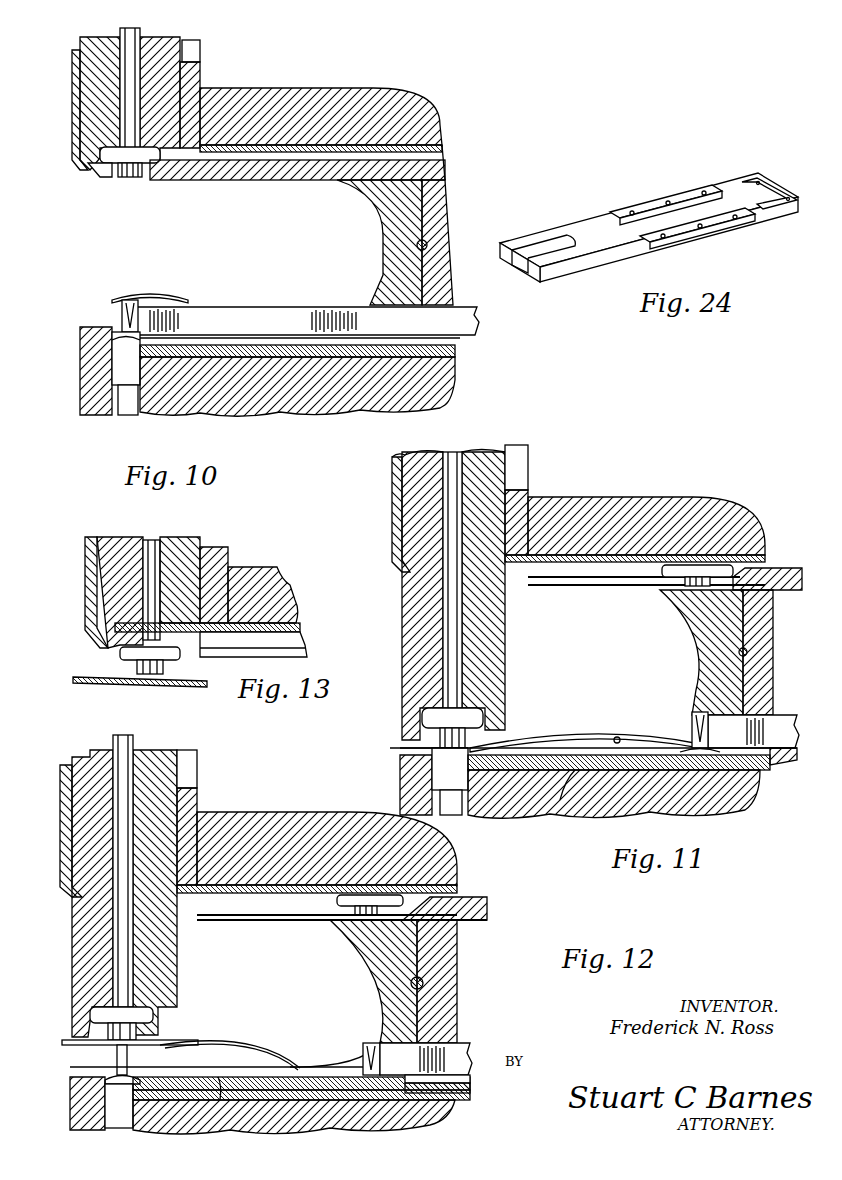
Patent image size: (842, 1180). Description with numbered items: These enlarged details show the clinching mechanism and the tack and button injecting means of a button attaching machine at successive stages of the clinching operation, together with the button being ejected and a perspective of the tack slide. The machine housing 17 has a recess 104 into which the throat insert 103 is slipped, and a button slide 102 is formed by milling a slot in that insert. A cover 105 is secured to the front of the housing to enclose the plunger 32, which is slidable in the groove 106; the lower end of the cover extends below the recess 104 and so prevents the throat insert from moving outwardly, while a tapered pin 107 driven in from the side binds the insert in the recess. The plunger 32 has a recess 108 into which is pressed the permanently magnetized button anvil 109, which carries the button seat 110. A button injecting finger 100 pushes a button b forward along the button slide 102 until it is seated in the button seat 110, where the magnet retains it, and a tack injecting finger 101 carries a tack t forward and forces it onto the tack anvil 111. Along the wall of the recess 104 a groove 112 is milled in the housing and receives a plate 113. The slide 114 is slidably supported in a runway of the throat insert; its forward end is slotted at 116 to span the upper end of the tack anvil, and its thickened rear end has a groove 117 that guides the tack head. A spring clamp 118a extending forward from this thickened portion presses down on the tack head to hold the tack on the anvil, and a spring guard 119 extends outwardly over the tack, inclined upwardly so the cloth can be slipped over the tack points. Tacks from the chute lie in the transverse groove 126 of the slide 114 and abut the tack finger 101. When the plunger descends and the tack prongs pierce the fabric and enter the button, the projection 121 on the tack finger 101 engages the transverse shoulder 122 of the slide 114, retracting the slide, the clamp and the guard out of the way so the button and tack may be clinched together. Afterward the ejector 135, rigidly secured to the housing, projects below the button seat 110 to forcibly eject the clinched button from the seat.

In FIG. 10, the machine housing 17 is at (360, 95).
In FIG. 13, the machine housing 17 is at (255, 578).
In FIG. 11, the machine housing 17 is at (665, 505).
In FIG. 12, the machine housing 17 is at (362, 820).
In FIG. 10, the plunger 32 is at (110, 75).
In FIG. 11, the plunger 32 is at (430, 494).
In FIG. 10, the button injecting finger 100 is at (445, 170).
In FIG. 11, the button injecting finger 100 is at (790, 568).
In FIG. 12, the button injecting finger 100 is at (476, 900).
In FIG. 10, the tack injecting finger 101 is at (455, 322).
In FIG. 11, the tack injecting finger 101 is at (778, 722).
In FIG. 12, the tack injecting finger 101 is at (455, 1052).
In FIG. 10, the button slide 102 is at (397, 132).
In FIG. 13, the button slide 102 is at (305, 642).
In FIG. 11, the button slide 102 is at (678, 533).
In FIG. 12, the button slide 102 is at (285, 815).
In FIG. 10, the throat insert 103 is at (380, 212).
In FIG. 13, the throat insert 103 is at (293, 615).
In FIG. 11, the throat insert 103 is at (700, 622).
In FIG. 12, the throat insert 103 is at (440, 952).
In FIG. 10, the recess 104 is at (285, 92).
In FIG. 13, the recess 104 is at (207, 627).
In FIG. 11, the recess 104 is at (590, 540).
In FIG. 12, the recess 104 is at (452, 998).
In FIG. 10, the cover 105 is at (72, 52).
In FIG. 11, the cover 105 is at (395, 470).
In FIG. 12, the cover 105 is at (62, 768).
In FIG. 10, the groove 106 is at (200, 70).
In FIG. 13, the groove 106 is at (228, 556).
In FIG. 11, the groove 106 is at (530, 500).
In FIG. 12, the groove 106 is at (200, 812).
In FIG. 10, the tapered pin 107 is at (430, 243).
In FIG. 11, the tapered pin 107 is at (740, 652).
In FIG. 12, the tapered pin 107 is at (430, 985).
In FIG. 10, the recess 108 is at (193, 40).
In FIG. 11, the recess 108 is at (520, 462).
In FIG. 12, the recess 108 is at (200, 782).
In FIG. 10, the button anvil 109 is at (152, 42).
In FIG. 11, the button anvil 109 is at (500, 447).
In FIG. 12, the button anvil 109 is at (175, 746).
In FIG. 10, the button seat 110 is at (150, 150).
In FIG. 13, the button seat 110 is at (170, 540).
In FIG. 11, the button seat 110 is at (470, 690).
In FIG. 12, the button seat 110 is at (150, 1003).
In FIG. 10, the tack anvil 111 is at (118, 400).
In FIG. 11, the tack anvil 111 is at (455, 812).
In FIG. 12, the tack anvil 111 is at (118, 1126).
In FIG. 10, the groove 112 is at (430, 364).
In FIG. 11, the groove 112 is at (720, 800).
In FIG. 12, the groove 112 is at (348, 1110).
In FIG. 10, the plate 113 is at (458, 352).
In FIG. 11, the plate 113 is at (740, 775).
In FIG. 12, the plate 113 is at (282, 1110).
In FIG. 24, the slide 114 is at (585, 226).
In FIG. 12, the slide 114 is at (470, 1092).
In FIG. 24, the slot 116 is at (558, 250).
In FIG. 24, the groove 117 is at (665, 200).
In FIG. 11, the spring clamp 118a is at (560, 800).
In FIG. 12, the spring clamp 118a is at (220, 1100).
In FIG. 10, the spring guard 119 is at (190, 300).
In FIG. 11, the spring guard 119 is at (600, 733).
In FIG. 12, the spring guard 119 is at (240, 1048).
In FIG. 12, the projection 121 is at (440, 1102).
In FIG. 12, the transverse shoulder 122 is at (470, 1078).
In FIG. 24, the transverse groove 126 is at (733, 190).
In FIG. 10, the ejector 135 is at (128, 32).
In FIG. 13, the ejector 135 is at (145, 600).
In FIG. 11, the ejector 135 is at (455, 602).
In FIG. 12, the ejector 135 is at (123, 871).
In FIG. 10, the button b is at (130, 178).
In FIG. 13, the button b is at (115, 655).
In FIG. 11, the button b is at (735, 540).
In FIG. 12, the button b is at (440, 875).
In FIG. 10, the tack t is at (122, 310).
In FIG. 13, the tack t is at (148, 688).
In FIG. 11, the tack t is at (697, 735).
In FIG. 12, the tack t is at (130, 1058).